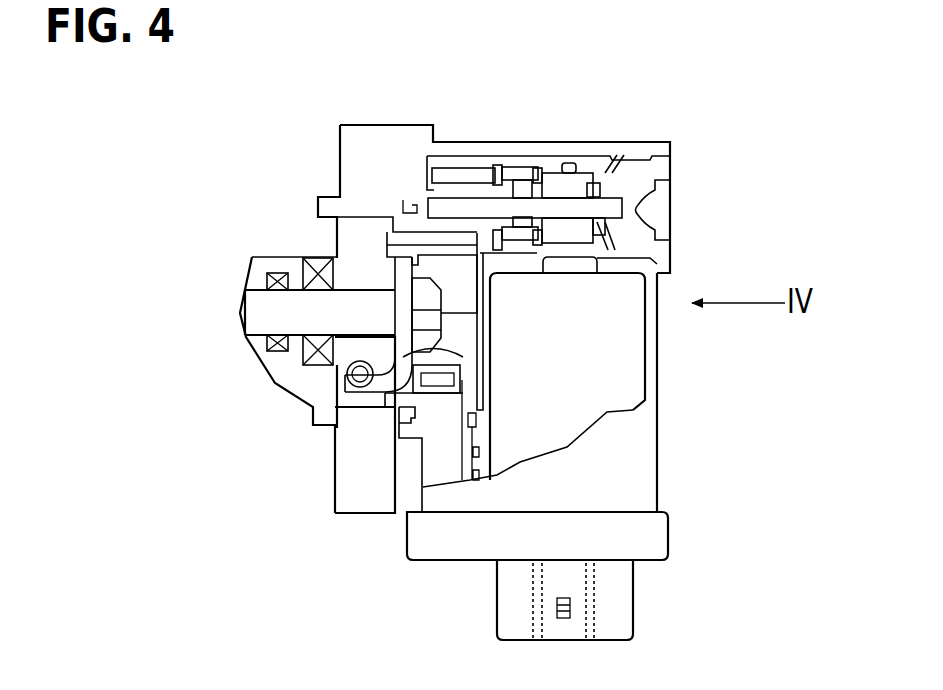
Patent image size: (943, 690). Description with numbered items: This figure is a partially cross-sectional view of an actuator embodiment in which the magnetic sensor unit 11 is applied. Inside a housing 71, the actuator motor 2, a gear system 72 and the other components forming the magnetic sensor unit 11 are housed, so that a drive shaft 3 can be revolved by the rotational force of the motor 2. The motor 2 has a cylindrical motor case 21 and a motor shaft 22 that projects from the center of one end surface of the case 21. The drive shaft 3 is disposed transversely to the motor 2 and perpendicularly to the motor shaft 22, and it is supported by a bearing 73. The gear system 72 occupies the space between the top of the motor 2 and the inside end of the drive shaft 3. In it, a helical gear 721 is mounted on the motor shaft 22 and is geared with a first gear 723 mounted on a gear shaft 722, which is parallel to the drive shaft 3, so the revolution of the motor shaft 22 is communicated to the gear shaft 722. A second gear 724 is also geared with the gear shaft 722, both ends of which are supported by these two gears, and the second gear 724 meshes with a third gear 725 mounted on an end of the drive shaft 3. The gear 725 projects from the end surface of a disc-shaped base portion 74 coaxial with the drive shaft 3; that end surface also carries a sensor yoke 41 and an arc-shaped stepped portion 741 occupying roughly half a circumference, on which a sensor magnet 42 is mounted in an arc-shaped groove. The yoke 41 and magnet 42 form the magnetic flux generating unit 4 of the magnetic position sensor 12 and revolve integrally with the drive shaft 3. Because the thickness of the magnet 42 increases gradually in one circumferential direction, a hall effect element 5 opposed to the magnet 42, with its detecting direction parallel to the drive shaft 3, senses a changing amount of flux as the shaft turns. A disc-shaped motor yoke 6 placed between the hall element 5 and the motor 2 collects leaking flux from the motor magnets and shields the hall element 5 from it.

The actuator motor 2 is at (668, 396).
The drive shaft 3 is at (270, 314).
The magnetic flux generating unit 4 is at (217, 489).
The hall effect element 5 is at (262, 345).
The motor yoke 6 is at (483, 337).
The magnetic sensor unit 11 is at (680, 219).
The magnetic position sensor 12 is at (447, 407).
The motor case 21 is at (603, 345).
The motor shaft 22 is at (570, 253).
The sensor yoke 41 is at (413, 388).
The sensor magnet 42 is at (440, 376).
The housing 71 is at (443, 537).
The gear system 72 is at (482, 158).
The bearing 73 is at (296, 264).
The base portion 74 is at (396, 282).
The helical gear 721 is at (580, 250).
The gear shaft 722 is at (508, 207).
The first gear 723 is at (561, 183).
The second gear 724 is at (454, 176).
The third gear 725 is at (442, 253).
The stepped portion 741 is at (396, 384).